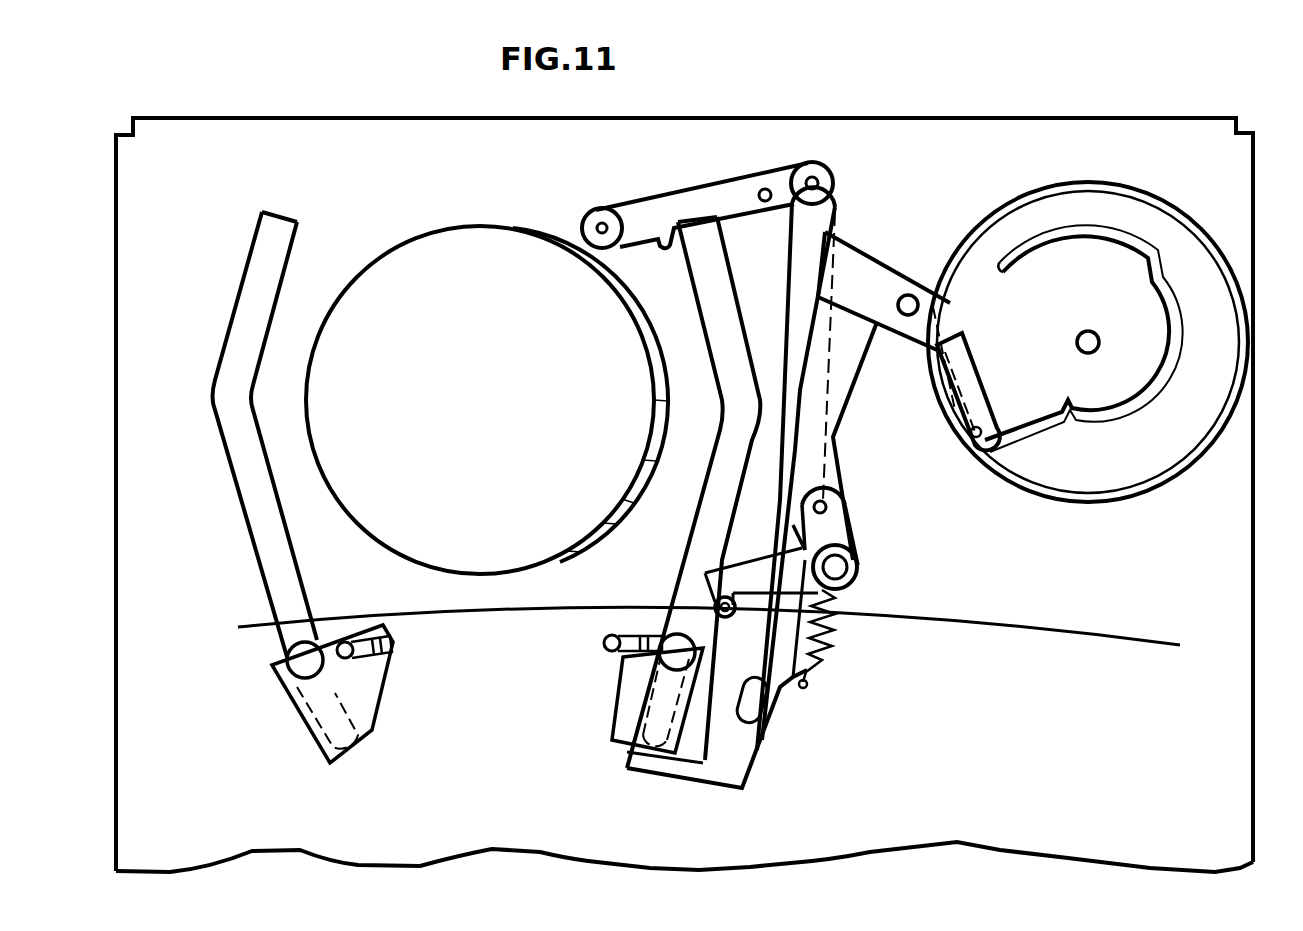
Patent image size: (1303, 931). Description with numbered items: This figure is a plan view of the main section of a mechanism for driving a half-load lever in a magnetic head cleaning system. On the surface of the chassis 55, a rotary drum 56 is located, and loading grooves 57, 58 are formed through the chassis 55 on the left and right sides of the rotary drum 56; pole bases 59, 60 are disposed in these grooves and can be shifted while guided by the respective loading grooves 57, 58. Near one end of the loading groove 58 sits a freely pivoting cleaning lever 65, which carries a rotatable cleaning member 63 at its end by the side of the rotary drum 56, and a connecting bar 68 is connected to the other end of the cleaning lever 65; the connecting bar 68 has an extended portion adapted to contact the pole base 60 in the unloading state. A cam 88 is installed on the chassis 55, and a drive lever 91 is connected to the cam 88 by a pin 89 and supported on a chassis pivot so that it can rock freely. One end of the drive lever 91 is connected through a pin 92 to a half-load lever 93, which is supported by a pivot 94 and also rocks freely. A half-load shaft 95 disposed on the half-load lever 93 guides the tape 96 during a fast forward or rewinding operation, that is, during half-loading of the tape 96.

The chassis 55 is at (1153, 128).
The rotary drum 56 is at (452, 263).
The loading groove 57 is at (268, 558).
The loading groove 58 is at (727, 268).
The pole base 59 is at (367, 683).
The pole base 60 is at (630, 675).
The cleaning member 63 is at (592, 218).
The cleaning lever 65 is at (693, 200).
The connecting bar 68 is at (825, 205).
The cam 88 is at (1143, 212).
The pin 89 is at (975, 448).
The drive lever 91 is at (862, 268).
The pin 92 is at (823, 500).
The half-load lever 93 is at (850, 517).
The pivot 94 is at (857, 540).
The half-load shaft 95 is at (908, 295).
The tape 96 is at (1095, 632).